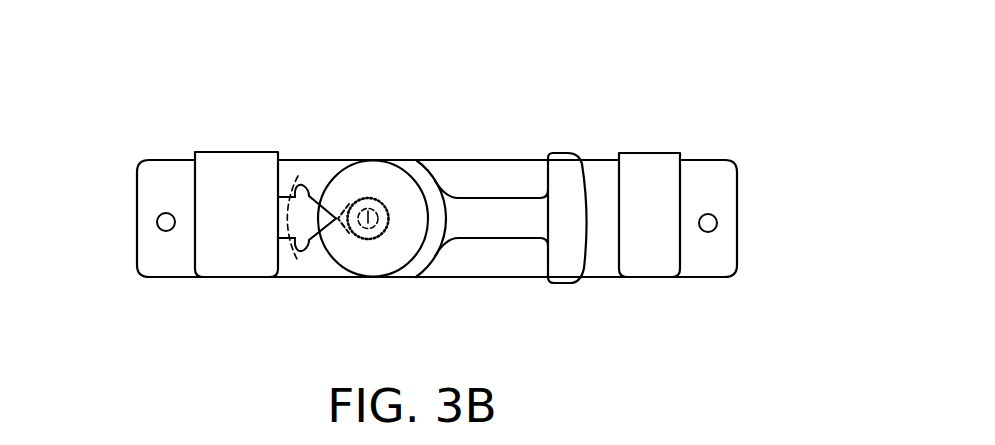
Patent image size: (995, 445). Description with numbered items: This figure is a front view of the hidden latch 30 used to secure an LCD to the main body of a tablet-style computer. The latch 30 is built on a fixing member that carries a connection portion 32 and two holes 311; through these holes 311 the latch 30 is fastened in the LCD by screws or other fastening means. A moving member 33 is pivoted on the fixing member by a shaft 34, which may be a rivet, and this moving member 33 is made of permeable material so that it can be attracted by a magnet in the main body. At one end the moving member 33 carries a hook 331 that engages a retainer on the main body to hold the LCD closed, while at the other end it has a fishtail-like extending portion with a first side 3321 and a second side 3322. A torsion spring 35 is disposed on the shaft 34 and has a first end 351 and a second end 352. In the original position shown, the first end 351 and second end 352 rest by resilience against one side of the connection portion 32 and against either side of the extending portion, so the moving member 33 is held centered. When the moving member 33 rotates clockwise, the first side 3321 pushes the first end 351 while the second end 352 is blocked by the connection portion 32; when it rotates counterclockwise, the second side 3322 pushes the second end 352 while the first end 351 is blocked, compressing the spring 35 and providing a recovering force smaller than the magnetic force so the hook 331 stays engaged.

The latch 30 is at (55, 47).
The holes 311 is at (157, 223).
The connection portion 32 is at (277, 205).
The first side 3321 is at (306, 190).
The second side 3322 is at (303, 252).
The moving member 33 is at (492, 228).
The hook 331 is at (567, 176).
The shaft 34 is at (371, 207).
The spring 35 is at (391, 213).
The first end 351 is at (318, 206).
The second end 352 is at (324, 241).